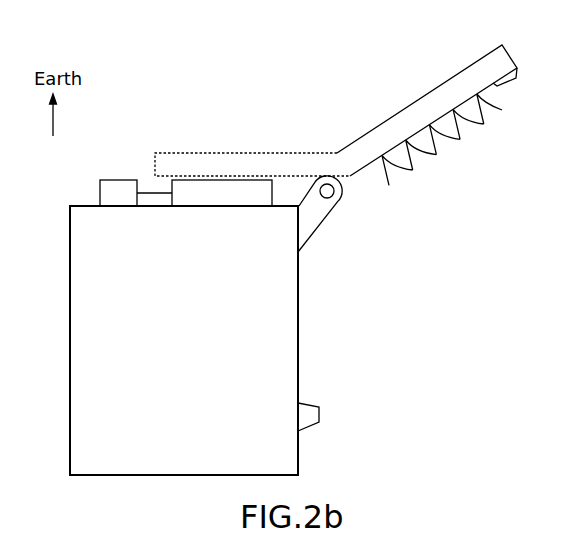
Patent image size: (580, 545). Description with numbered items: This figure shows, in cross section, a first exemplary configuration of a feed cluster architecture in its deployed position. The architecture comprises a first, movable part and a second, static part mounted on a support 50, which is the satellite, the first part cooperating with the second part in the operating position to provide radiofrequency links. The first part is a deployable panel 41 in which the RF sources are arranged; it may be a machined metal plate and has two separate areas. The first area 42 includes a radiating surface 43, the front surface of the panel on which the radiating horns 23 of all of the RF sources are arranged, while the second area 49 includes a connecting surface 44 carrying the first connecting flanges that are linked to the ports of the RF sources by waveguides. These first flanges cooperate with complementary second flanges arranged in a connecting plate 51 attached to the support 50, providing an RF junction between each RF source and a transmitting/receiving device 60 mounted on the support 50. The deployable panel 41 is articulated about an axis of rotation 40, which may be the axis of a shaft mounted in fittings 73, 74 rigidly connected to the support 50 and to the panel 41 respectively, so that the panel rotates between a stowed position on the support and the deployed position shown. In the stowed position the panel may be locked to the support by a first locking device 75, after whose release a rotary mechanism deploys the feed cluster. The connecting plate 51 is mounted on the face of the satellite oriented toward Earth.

The radiating horn 23 is at (452, 143).
The axis of rotation 40 is at (355, 228).
The deployable panel 41 is at (423, 114).
The first area 42 is at (430, 93).
The radiating surface 43 is at (485, 90).
The connecting surface 44 is at (183, 175).
The second area 49 is at (252, 130).
The support 50 is at (298, 293).
The connecting plate 51 is at (191, 200).
The transmitting/receiving device 60 is at (117, 180).
The fitting 73 is at (306, 221).
The fitting 74 is at (343, 187).
The first locking device 75 is at (310, 413).